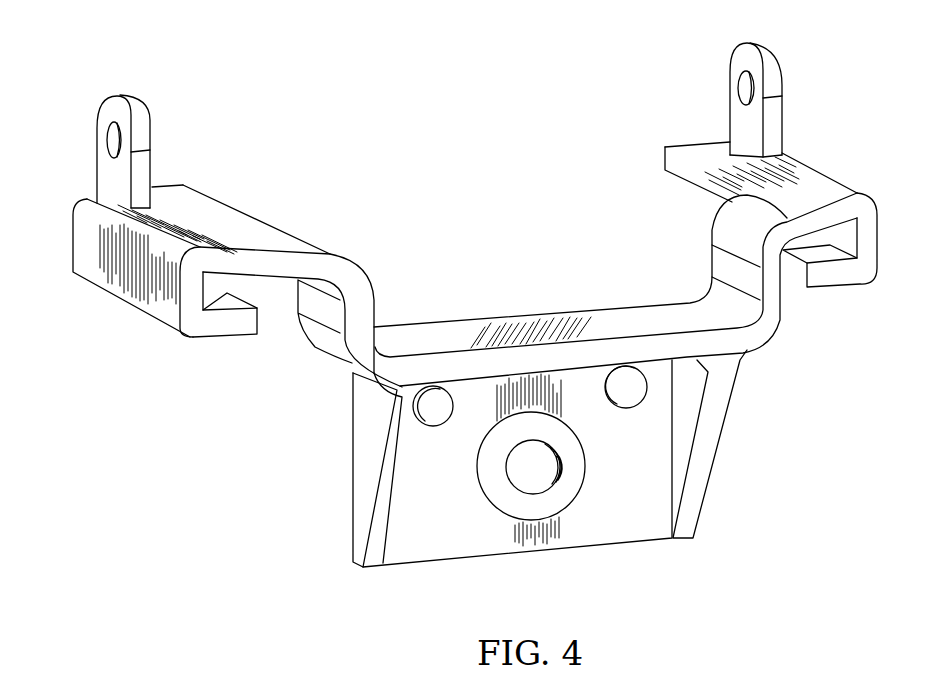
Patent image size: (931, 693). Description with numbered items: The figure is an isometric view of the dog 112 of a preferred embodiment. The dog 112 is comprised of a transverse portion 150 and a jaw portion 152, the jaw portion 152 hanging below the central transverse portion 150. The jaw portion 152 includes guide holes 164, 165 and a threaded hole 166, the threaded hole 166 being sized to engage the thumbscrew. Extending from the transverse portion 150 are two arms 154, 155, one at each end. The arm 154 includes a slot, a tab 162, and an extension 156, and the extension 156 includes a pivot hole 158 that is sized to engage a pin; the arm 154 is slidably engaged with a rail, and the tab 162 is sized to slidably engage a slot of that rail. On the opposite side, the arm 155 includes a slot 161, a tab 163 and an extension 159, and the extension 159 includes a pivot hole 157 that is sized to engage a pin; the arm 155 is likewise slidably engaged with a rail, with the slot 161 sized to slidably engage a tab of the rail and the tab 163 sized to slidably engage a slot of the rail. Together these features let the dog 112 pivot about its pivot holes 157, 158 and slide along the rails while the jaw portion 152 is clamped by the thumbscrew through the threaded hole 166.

The dog 112 is at (331, 72).
The transverse portion 150 is at (578, 322).
The jaw portion 152 is at (550, 482).
The arm 154 is at (845, 188).
The arm 155 is at (202, 207).
The extension 156 is at (752, 100).
The pivot hole 157 is at (106, 142).
The pivot hole 158 is at (740, 93).
The extension 159 is at (117, 151).
The slot 161 is at (77, 225).
The tab 162 is at (830, 278).
The tab 163 is at (237, 328).
The guide holes 164 is at (627, 413).
The mounting hole 165 is at (443, 420).
The threaded hole 166 is at (507, 470).